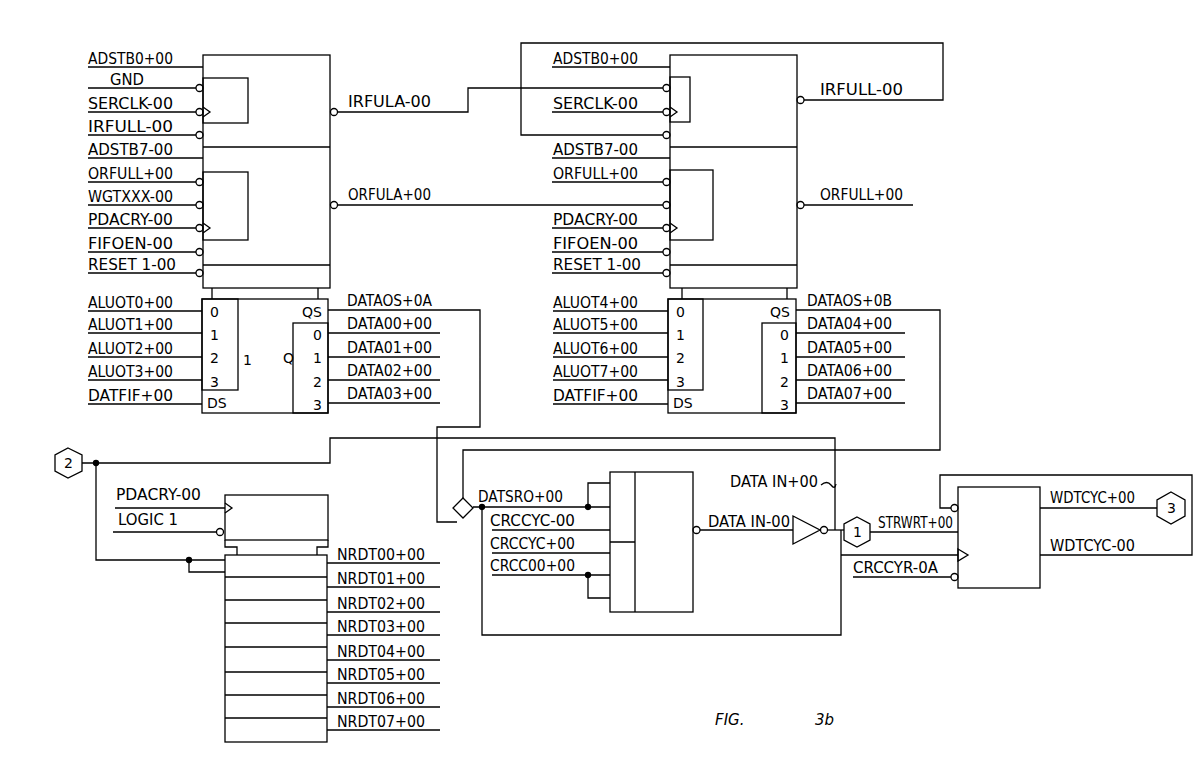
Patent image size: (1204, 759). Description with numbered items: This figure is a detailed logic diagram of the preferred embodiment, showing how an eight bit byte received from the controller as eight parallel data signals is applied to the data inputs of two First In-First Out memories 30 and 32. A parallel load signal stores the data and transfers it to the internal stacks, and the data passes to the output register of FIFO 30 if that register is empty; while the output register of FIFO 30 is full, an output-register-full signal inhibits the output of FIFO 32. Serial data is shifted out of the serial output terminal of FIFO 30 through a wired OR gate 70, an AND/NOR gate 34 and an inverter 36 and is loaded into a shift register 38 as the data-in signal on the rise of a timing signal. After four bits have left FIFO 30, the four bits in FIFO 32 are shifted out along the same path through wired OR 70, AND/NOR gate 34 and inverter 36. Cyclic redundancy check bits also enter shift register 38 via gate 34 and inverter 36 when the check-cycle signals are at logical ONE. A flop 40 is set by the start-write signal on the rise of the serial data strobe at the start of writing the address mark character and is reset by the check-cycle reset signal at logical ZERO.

The First In-First Out (FIFO) memory 30 is at (332, 83).
The First In-First Out (FIFO) memory 32 is at (797, 158).
The AND/NOR gate 34 is at (693, 567).
The inverter 36 is at (808, 546).
The shift register 38 is at (330, 523).
The flop 40 is at (1022, 589).
The wired OR gate 70 is at (466, 516).